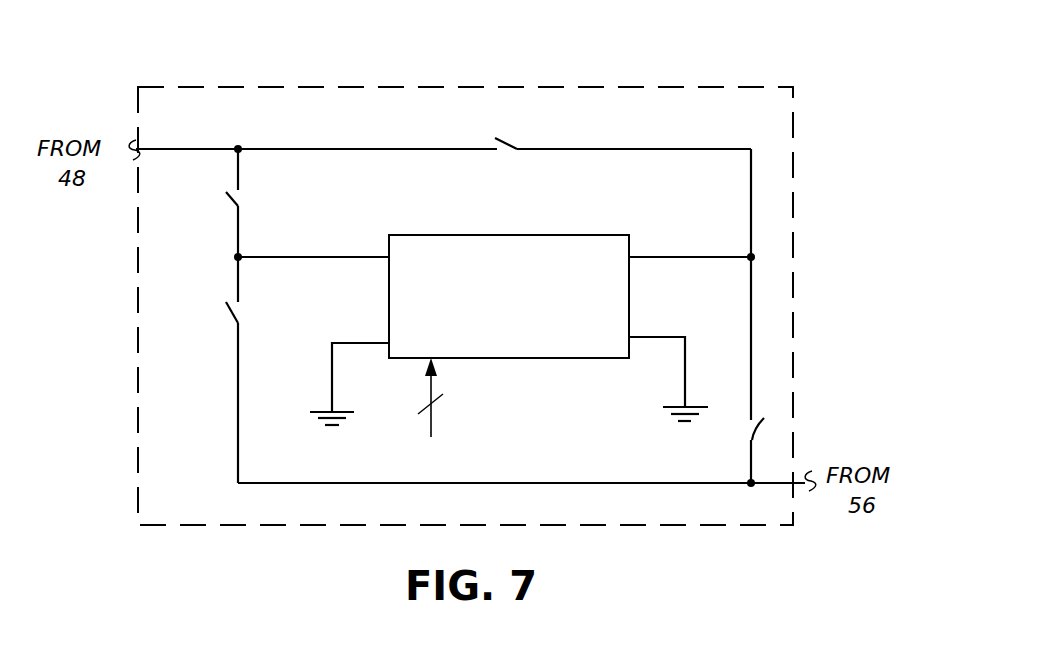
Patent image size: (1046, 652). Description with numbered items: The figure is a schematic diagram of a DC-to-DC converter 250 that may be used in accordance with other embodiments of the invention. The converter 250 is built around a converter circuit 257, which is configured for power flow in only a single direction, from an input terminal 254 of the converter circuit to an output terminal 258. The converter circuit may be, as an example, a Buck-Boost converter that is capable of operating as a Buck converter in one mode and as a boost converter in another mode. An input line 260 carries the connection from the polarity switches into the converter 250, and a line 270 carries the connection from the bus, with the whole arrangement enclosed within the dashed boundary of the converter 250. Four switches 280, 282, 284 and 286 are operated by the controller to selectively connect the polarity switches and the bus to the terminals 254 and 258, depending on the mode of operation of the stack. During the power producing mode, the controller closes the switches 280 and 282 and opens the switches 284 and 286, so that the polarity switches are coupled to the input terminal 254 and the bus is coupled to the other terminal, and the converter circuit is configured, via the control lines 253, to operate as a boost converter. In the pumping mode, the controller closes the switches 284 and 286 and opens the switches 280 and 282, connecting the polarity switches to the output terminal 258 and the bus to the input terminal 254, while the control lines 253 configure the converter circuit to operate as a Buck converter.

The converter 250 is at (744, 78).
The control lines 253 is at (433, 428).
The input terminal 254 is at (313, 233).
The converter circuit 257 is at (509, 320).
The output terminal 258 is at (674, 224).
The input line from 48 260 is at (316, 127).
The line from 56 270 is at (561, 453).
The switch 280 is at (192, 205).
The switch 282 is at (810, 426).
The switch 284 is at (625, 263).
The switch 286 is at (190, 370).